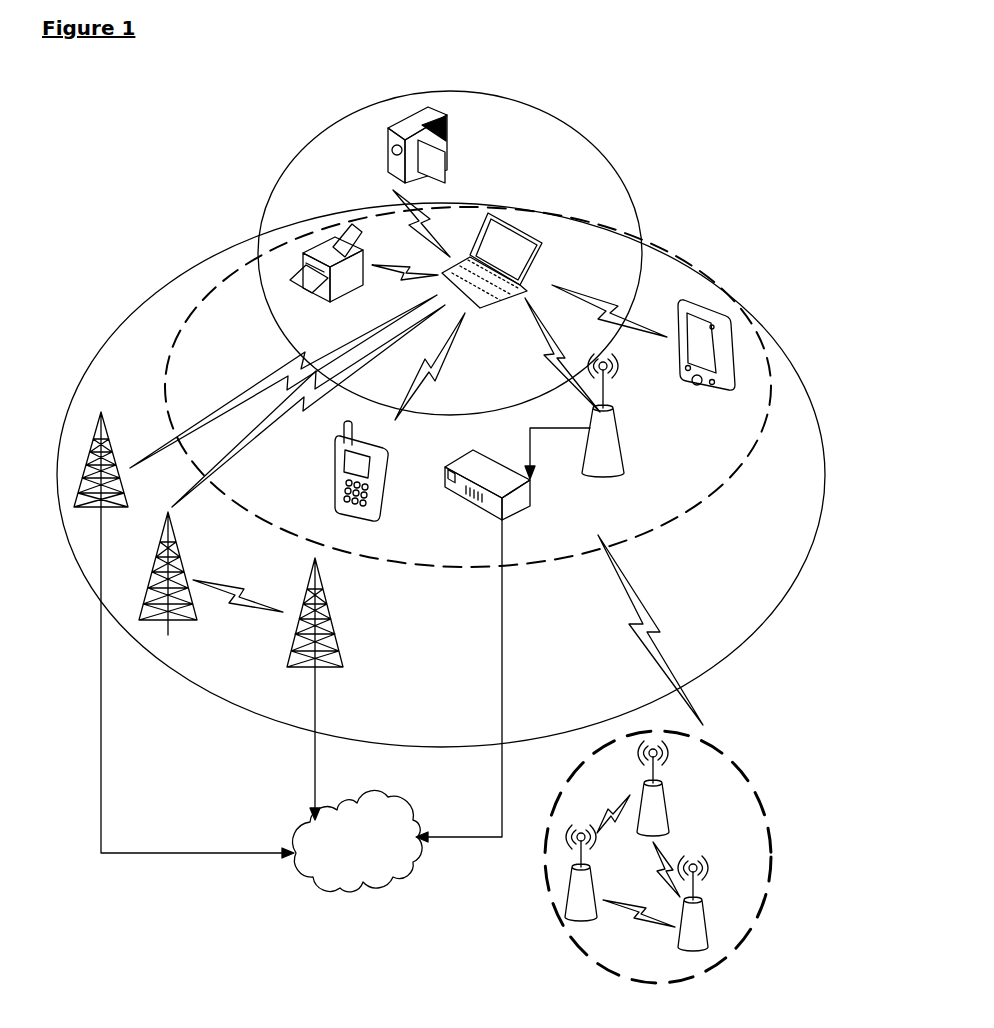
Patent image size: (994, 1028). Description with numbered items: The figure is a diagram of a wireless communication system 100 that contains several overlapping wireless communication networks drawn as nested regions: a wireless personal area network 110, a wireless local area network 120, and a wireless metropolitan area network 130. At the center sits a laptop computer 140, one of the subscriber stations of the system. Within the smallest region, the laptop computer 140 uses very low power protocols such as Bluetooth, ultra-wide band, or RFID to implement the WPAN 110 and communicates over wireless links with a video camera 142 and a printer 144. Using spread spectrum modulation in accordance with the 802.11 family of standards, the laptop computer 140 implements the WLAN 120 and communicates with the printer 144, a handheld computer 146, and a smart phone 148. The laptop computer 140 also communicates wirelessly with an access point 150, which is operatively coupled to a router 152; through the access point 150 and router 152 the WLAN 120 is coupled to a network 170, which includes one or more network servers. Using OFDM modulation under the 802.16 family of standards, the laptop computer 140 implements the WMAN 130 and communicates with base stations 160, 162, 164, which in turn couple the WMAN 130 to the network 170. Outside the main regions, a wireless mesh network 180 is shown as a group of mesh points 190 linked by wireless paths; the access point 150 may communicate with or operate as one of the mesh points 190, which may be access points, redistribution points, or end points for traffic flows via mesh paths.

The wireless communication system 100 is at (651, 97).
The wireless personal area network 110 is at (258, 238).
The wireless local area network 120 is at (203, 293).
The wireless metropolitan area network 130 is at (138, 305).
The laptop computer 140 is at (517, 225).
The video camera 142 is at (452, 156).
The printer 144 is at (360, 288).
The handheld computer 146 is at (723, 397).
The smart phone 148 is at (382, 515).
The access point 150 is at (622, 473).
The router 152 is at (530, 510).
The base station 160 is at (100, 412).
The base station 162 is at (183, 580).
The base station 164 is at (335, 630).
The network 170 is at (412, 815).
The wireless mesh network 180 is at (665, 847).
The mesh point 190 is at (695, 838).